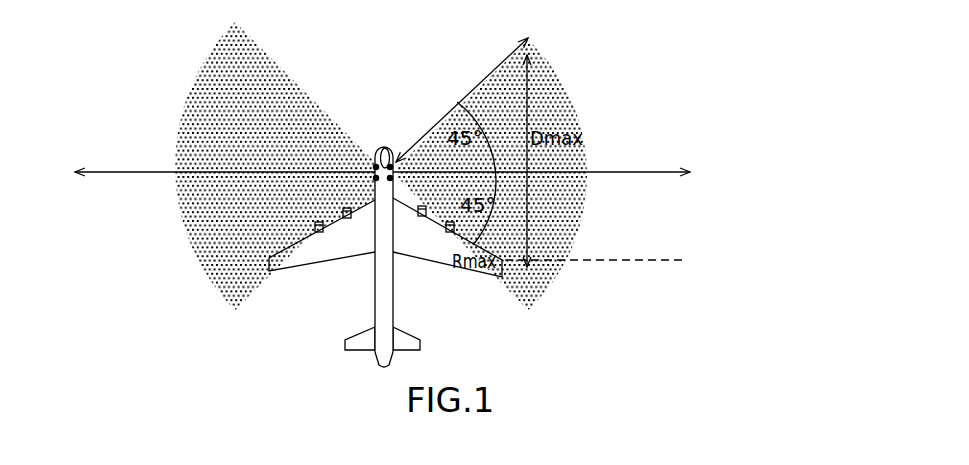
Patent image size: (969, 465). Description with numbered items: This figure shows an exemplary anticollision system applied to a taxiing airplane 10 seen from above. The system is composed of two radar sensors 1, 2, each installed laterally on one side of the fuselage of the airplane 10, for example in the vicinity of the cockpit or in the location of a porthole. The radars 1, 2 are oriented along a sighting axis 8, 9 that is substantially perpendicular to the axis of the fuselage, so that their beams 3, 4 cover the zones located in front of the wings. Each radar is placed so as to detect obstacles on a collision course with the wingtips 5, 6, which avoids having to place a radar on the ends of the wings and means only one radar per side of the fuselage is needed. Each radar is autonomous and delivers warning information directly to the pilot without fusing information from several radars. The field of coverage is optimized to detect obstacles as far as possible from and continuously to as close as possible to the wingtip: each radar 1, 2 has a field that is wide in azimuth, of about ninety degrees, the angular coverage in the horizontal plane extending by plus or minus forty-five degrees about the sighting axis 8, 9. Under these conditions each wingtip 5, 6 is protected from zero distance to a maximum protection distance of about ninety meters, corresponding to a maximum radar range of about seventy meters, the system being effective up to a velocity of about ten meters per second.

The radar sensor 1 is at (376, 160).
The radar sensor 2 is at (384, 148).
The beam 3 is at (258, 74).
The beam 4 is at (552, 89).
The wingtip 5 is at (270, 272).
The wingtip 6 is at (503, 277).
The sighting axis 8 is at (622, 171).
The sighting axis 9 is at (148, 172).
The airplane 10 is at (383, 257).